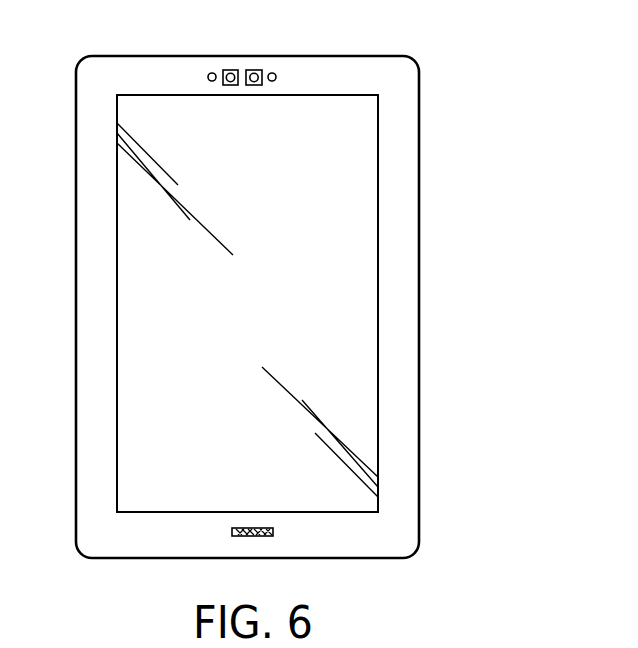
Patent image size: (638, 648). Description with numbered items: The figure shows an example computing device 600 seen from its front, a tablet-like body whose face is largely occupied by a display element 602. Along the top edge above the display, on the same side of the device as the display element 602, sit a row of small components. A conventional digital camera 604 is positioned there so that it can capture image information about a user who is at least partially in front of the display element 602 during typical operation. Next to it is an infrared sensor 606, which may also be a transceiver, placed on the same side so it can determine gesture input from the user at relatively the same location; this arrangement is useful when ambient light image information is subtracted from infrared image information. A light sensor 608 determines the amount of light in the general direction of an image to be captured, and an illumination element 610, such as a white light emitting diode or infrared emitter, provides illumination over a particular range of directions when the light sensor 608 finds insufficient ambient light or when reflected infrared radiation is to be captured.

The computing device 600 is at (568, 113).
The display element 602 is at (117, 105).
The digital camera 604 is at (230, 70).
The infrared (IR) sensor 606 is at (255, 70).
The light sensor 608 is at (276, 74).
The illumination element 610 is at (208, 73).